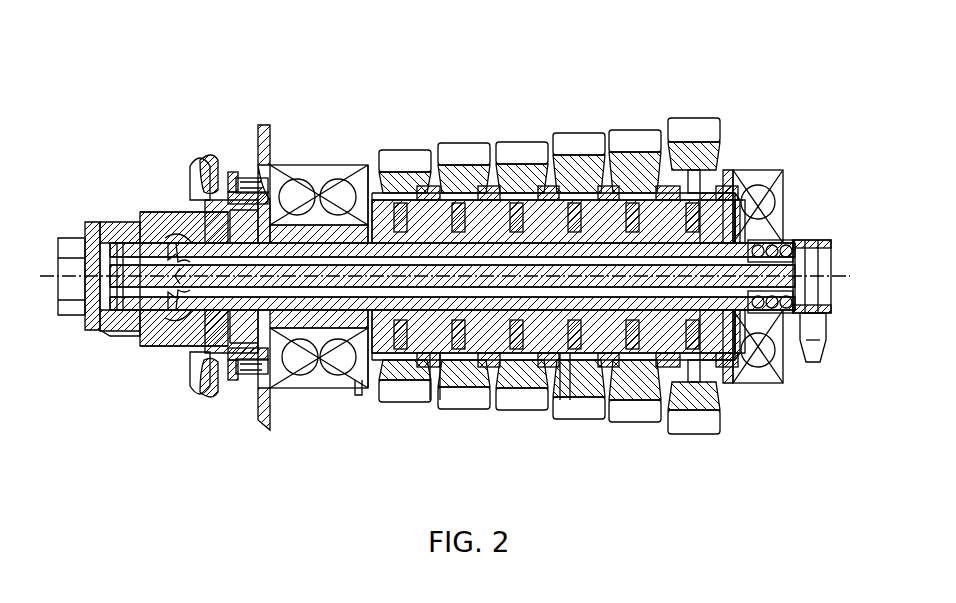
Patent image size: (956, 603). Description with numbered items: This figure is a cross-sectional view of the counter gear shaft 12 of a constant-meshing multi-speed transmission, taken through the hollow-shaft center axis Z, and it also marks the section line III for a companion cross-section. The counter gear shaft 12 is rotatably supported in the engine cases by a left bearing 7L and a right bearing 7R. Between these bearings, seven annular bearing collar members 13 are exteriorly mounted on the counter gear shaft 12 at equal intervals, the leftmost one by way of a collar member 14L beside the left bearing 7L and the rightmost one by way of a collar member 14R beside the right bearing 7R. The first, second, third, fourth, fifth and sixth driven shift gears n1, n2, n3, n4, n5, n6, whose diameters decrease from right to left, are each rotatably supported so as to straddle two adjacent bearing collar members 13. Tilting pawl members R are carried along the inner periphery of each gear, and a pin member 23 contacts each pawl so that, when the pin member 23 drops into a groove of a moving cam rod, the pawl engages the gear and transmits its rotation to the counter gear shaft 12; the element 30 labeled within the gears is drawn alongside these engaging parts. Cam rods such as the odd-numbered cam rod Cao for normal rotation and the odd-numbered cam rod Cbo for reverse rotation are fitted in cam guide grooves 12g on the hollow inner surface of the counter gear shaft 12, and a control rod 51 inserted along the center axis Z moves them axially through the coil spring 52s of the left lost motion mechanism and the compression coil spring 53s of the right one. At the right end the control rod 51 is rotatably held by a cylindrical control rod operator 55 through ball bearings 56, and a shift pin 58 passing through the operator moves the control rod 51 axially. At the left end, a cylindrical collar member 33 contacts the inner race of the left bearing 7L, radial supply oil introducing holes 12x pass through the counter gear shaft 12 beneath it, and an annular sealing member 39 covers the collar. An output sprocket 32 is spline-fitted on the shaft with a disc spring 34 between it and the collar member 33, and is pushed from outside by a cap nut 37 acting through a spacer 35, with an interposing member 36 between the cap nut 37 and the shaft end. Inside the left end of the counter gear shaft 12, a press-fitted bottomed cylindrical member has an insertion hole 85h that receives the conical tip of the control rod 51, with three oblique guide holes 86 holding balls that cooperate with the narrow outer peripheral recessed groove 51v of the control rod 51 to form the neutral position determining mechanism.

The hollow-shaft center axis Z is at (444, 276).
The counter gear shaft 12 is at (540, 193).
The supply oil introducing hole 12x is at (258, 395).
The cam guide groove 12g is at (745, 200).
The odd-numbered cam rod for normal rotation Cao is at (497, 200).
The odd-numbered cam rod for reverse rotation Cbo is at (500, 353).
The upper gear elements 30 is at (428, 186).
The bearing collar member 13 is at (372, 367).
The first driven shift gear n1 is at (698, 118).
The second driven shift gear n2 is at (637, 130).
The third driven shift gear n3 is at (573, 133).
The fourth driven shift gear n4 is at (516, 142).
The fifth driven shift gear n5 is at (455, 143).
The sixth driven shift gear n6 is at (398, 150).
The tilting pawl member R is at (380, 172).
The left bearing 7L is at (310, 388).
The right bearing 7R is at (780, 383).
The collar member 14L is at (355, 392).
The collar member 14R is at (745, 383).
The control rod 51 is at (290, 243).
The outer peripheral recessed groove 51v is at (185, 290).
The collar member 33 is at (233, 172).
The annular sealing member 39 is at (236, 380).
The disc spring 34 is at (212, 160).
The guide hole 86 is at (192, 166).
The output sprocket 32 is at (205, 200).
The insertion hole 85h is at (170, 346).
The cap nut 37 is at (88, 222).
The spacer 35 is at (120, 222).
The interposing member 36 is at (98, 334).
The pin member 23 is at (742, 200).
The control rod operator 55 is at (790, 240).
The shift pin 58 is at (815, 240).
The ball bearing 56 is at (816, 320).
The coil spring 52s is at (433, 380).
The compression coil spring 53s is at (562, 380).
The section line III is at (700, 112).